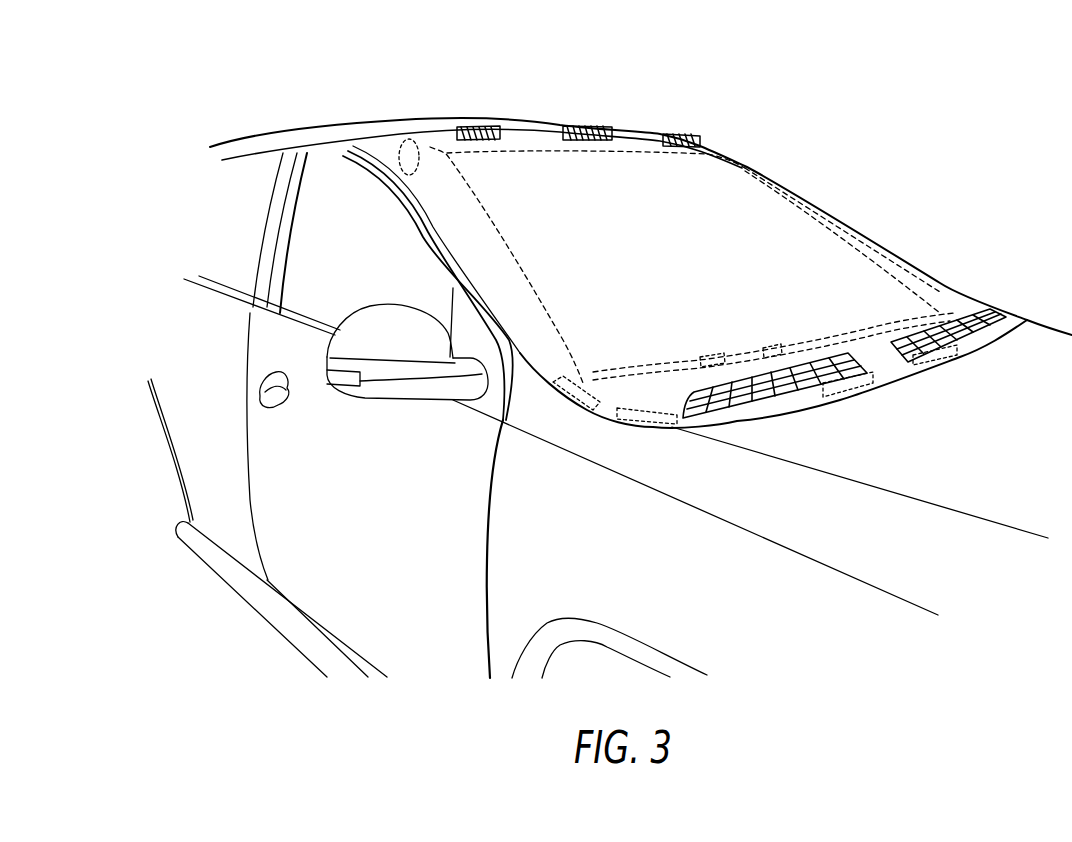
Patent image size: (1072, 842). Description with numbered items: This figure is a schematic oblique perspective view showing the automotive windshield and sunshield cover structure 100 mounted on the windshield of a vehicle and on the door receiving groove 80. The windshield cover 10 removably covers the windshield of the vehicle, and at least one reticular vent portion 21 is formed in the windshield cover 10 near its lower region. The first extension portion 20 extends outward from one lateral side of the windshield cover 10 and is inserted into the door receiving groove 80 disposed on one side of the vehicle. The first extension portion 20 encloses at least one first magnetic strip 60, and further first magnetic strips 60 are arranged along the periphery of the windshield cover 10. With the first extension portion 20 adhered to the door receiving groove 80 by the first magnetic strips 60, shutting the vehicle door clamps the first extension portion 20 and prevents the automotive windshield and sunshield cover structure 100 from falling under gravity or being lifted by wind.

The automotive windshield and sunshield cover structure 100 is at (757, 193).
The door receiving groove 80 is at (395, 162).
The first extension portion 20 is at (410, 139).
The first magnetic strip 60 is at (486, 126).
The windshield cover 10 is at (985, 311).
The reticular vent portion 21 is at (973, 308).